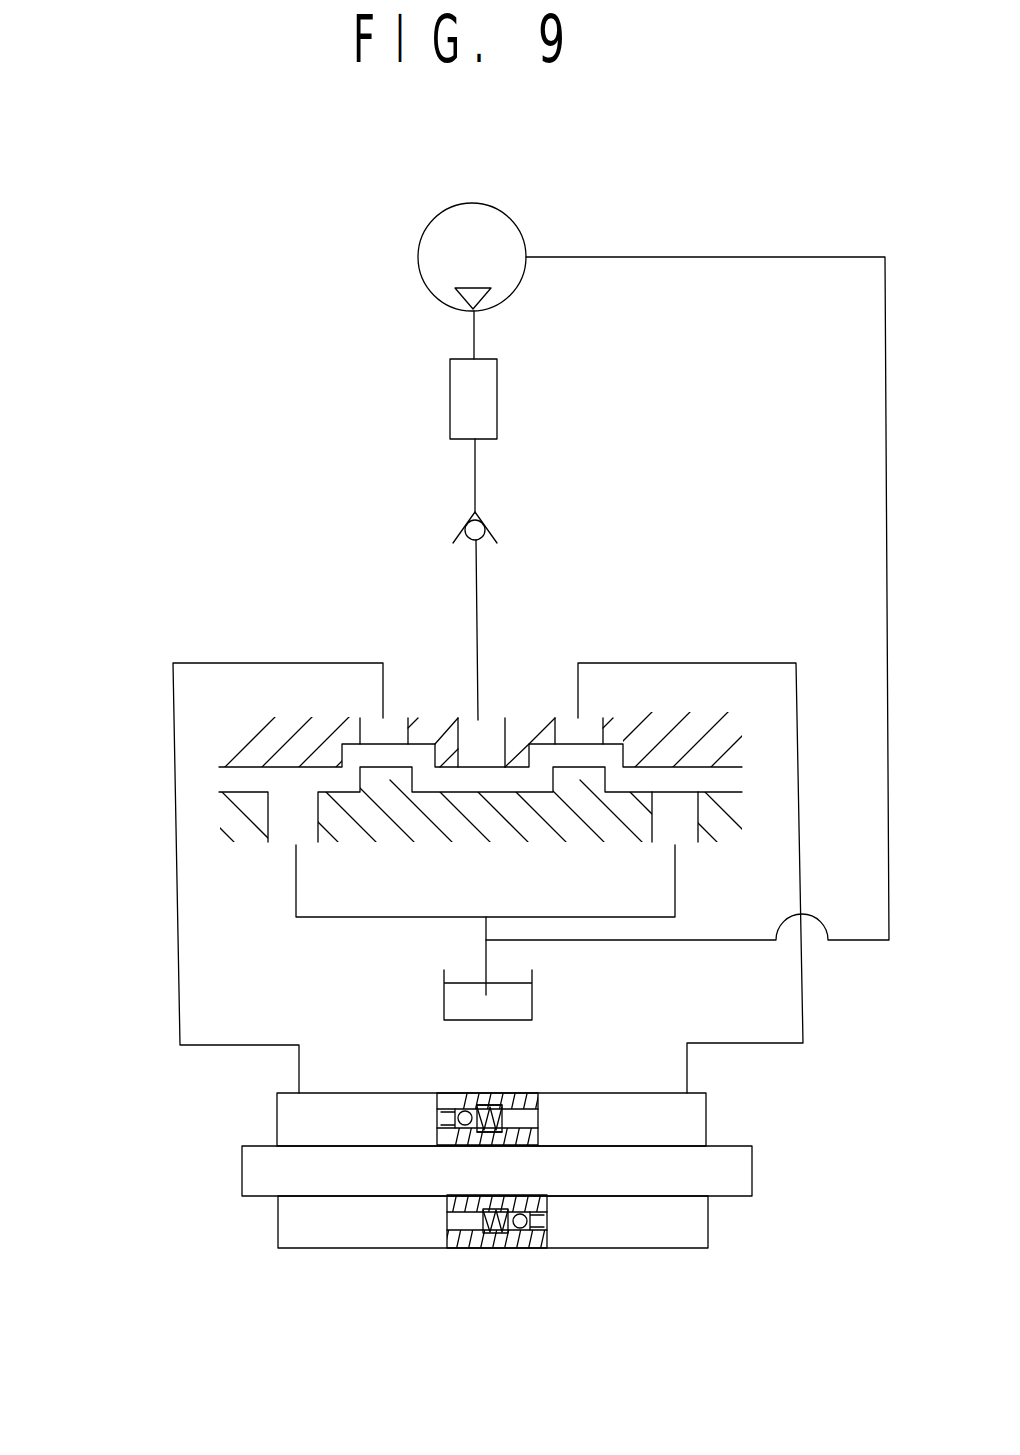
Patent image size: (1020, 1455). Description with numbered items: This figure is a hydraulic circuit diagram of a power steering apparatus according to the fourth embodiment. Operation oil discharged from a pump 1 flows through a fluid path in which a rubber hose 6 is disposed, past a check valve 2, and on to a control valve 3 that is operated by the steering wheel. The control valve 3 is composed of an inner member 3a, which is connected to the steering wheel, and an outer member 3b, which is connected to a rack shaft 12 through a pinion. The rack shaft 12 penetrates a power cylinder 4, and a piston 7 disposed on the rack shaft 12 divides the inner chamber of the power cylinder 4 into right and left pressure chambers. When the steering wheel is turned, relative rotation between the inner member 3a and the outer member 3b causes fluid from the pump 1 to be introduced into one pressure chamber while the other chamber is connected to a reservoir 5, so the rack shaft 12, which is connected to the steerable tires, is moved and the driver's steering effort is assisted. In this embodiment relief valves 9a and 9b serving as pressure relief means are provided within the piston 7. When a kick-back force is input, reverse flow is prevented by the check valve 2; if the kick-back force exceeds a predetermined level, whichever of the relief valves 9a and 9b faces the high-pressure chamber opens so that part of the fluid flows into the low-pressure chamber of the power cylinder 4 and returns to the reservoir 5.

The pump 1 is at (492, 230).
The check valve 2 is at (455, 520).
The control valve 3 is at (246, 684).
The inner member 3a is at (238, 822).
The outer member 3b is at (246, 740).
The power cylinder 4 is at (256, 1214).
The reservoir 5 is at (474, 992).
The rubber hose 6 is at (467, 388).
The piston 7 is at (502, 1093).
The relief valve 9a is at (605, 1216).
The relief valve 9b is at (396, 1117).
The rack shaft 12 is at (733, 1162).